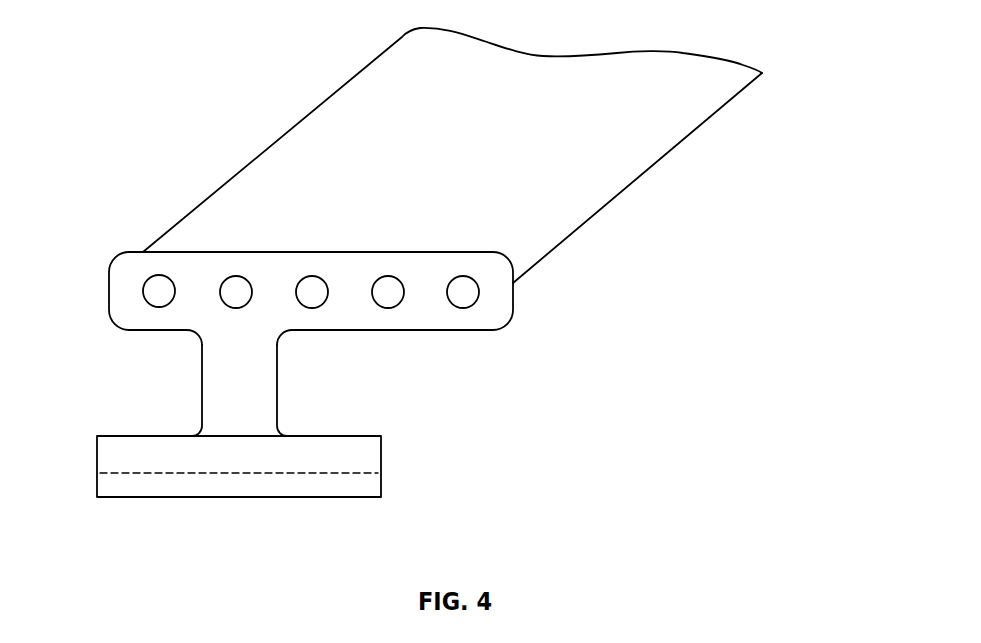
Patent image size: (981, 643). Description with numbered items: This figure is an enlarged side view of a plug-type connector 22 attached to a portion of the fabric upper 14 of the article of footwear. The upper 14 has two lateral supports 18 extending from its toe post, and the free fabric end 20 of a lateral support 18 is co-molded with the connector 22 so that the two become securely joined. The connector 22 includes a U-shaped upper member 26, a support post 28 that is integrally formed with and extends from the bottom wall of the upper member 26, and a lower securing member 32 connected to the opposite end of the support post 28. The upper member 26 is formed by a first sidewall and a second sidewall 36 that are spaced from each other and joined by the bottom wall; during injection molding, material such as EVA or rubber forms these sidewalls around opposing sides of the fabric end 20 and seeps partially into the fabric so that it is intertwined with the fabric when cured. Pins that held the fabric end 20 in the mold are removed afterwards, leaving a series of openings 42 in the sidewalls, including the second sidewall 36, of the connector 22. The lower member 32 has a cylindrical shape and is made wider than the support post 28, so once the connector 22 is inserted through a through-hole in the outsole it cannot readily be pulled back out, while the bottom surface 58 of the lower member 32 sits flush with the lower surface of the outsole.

The fabric upper 14 is at (250, 128).
The lateral support 18 is at (643, 160).
The end of lateral support 20 is at (481, 233).
The plug-type connector 22 is at (110, 284).
The U-shaped upper member 26 is at (163, 260).
The support post 28 is at (264, 389).
The lower securing member 32 is at (366, 460).
The second sidewall 36 is at (497, 319).
The openings 42 is at (236, 277).
The bottom surface 58 is at (280, 498).